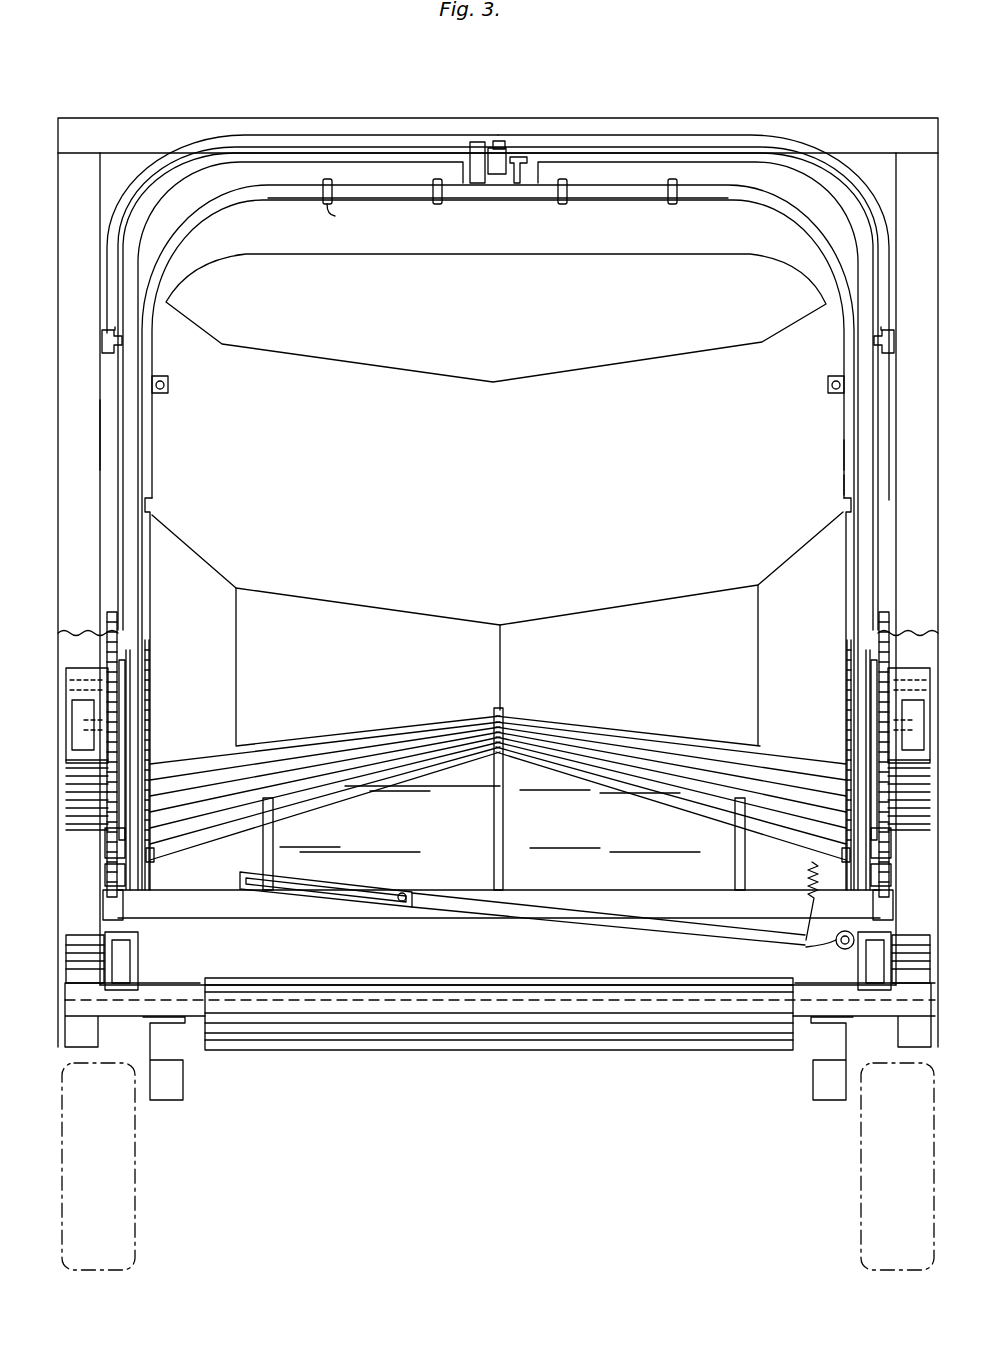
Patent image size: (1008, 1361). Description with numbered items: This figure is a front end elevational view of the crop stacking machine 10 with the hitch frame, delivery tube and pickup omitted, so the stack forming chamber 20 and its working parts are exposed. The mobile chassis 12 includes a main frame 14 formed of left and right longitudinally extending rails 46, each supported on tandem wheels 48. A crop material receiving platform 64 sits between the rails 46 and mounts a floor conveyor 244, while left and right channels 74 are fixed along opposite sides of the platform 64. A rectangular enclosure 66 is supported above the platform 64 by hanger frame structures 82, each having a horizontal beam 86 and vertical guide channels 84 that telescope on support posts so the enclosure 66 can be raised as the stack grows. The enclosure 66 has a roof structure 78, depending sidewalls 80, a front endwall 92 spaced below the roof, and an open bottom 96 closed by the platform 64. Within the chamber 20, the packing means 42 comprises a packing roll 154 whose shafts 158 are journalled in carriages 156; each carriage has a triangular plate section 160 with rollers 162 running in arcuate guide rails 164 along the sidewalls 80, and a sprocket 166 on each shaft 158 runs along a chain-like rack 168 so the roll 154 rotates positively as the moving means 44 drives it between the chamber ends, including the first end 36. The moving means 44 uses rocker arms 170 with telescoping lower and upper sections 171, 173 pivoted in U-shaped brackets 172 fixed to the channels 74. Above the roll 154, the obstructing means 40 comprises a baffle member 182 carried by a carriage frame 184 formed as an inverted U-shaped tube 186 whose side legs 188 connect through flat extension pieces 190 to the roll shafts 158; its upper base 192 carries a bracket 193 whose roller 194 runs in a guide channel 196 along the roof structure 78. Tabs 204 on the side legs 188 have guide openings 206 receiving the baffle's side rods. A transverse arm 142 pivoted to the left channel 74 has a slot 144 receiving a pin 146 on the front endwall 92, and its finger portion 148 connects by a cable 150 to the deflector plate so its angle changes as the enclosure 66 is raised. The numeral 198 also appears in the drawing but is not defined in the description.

The machine 10 is at (714, 92).
The mobile chassis 12 is at (680, 1064).
The main frame 14 is at (180, 1102).
The stack forming chamber 20 is at (110, 432).
The first chamber end 36 is at (830, 460).
The obstructing means 40 is at (496, 335).
The packing means 42 is at (497, 628).
The moving means 44 is at (70, 890).
The longitudinally extending rails 46 is at (152, 1102).
The wheels 48 is at (136, 1185).
The crop material receiving platform 64 is at (196, 988).
The enclosure 66 is at (655, 116).
The longitudinally extending channels 74 is at (140, 946).
The hood or roof structure 78 is at (405, 138).
The sidewalls 80 is at (118, 530).
The hanger frame structures 82 is at (215, 118).
The vertical guide channels 84 is at (58, 272).
The horizontal beam 86 is at (780, 118).
The front endwall 92 is at (574, 837).
The open bottom 96 is at (222, 894).
The transverse arm 142 is at (640, 918).
The slot 144 is at (360, 907).
The pin 146 is at (402, 892).
The finger portion 148 is at (830, 944).
The cable 150 is at (810, 906).
The packing roll 154 is at (428, 604).
The carriages 156 is at (128, 750).
The roll shafts 158 is at (70, 684).
The triangular plate section 160 is at (150, 762).
The rollers 162 is at (178, 784).
The guide rails 164 is at (152, 860).
The sprocket 166 is at (110, 610).
The chain-like rack 168 is at (115, 790).
The driving rocker arms 170 is at (64, 880).
The lower section 171 is at (70, 828).
The U-shaped bracket 172 is at (128, 960).
The upper section 173 is at (148, 708).
The baffle member 182 is at (462, 349).
The carriage frame 184 is at (836, 490).
The inverted U-shaped tube 186 is at (772, 228).
The side legs 188 is at (152, 440).
The flat extension piece 190 is at (150, 506).
The upper base 192 is at (632, 198).
The upwardly-extending bracket 193 is at (545, 165).
The roller 194 is at (498, 140).
The guide channel 196 is at (492, 200).
The clamp 198 is at (336, 216).
The tabs 204 is at (165, 377).
The guide opening 206 is at (168, 386).
The floor conveyor 244 is at (465, 978).